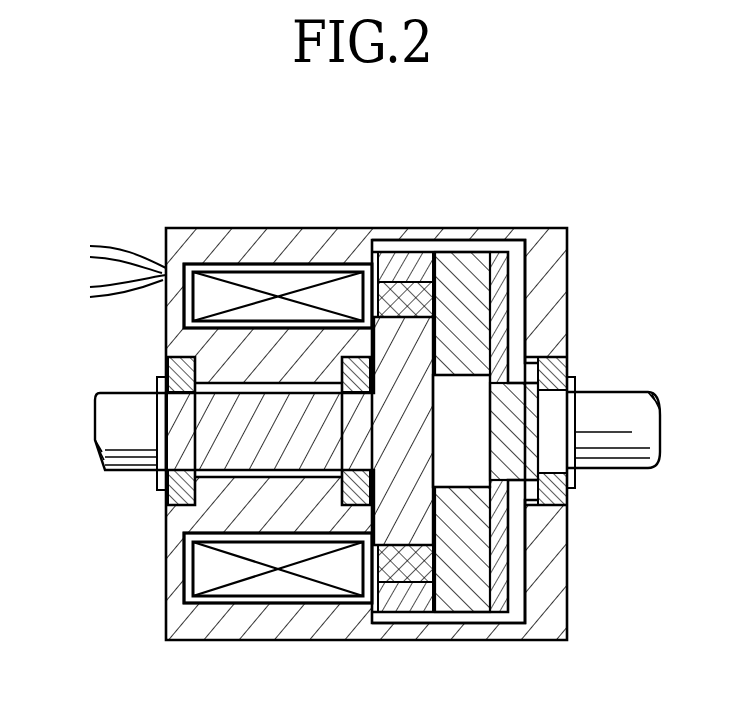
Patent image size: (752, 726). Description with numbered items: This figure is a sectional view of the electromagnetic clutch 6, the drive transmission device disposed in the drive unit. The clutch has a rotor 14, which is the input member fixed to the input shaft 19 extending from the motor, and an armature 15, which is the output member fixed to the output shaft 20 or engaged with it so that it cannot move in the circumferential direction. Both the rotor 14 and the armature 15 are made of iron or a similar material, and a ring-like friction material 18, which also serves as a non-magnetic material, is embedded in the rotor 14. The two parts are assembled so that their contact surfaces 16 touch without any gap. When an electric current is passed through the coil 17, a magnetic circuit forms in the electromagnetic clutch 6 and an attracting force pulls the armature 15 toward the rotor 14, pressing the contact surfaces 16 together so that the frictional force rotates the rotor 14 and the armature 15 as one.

The electromagnetic clutch 6 is at (123, 608).
The rotor 14 is at (422, 347).
The armature 15 is at (453, 573).
The contact surfaces 16 is at (507, 522).
The coil 17 is at (223, 298).
The friction material 18 is at (395, 275).
The input shaft 19 is at (188, 433).
The output shaft 20 is at (540, 420).